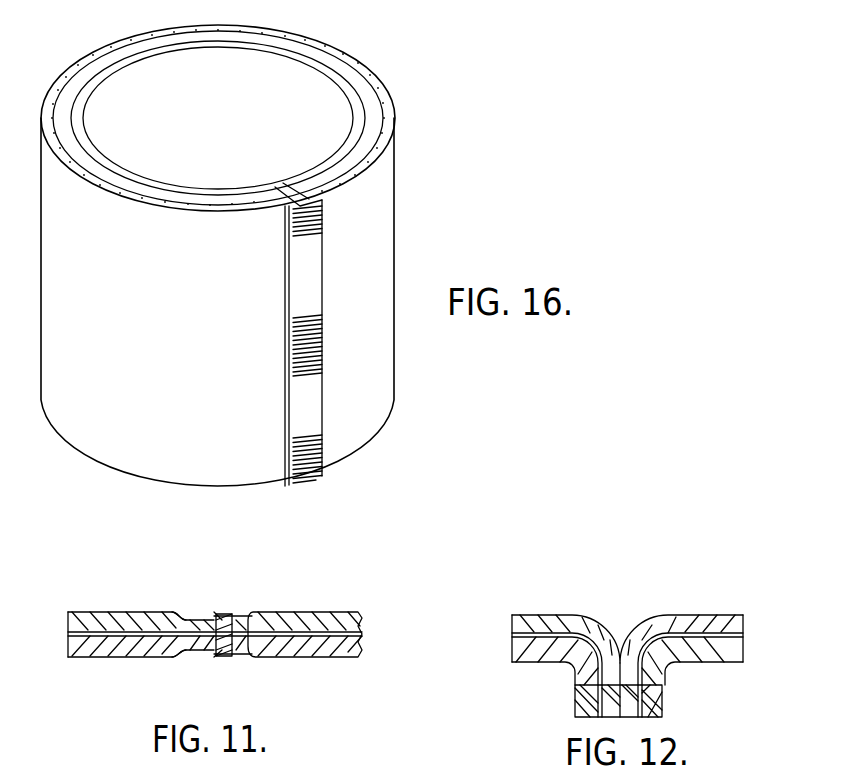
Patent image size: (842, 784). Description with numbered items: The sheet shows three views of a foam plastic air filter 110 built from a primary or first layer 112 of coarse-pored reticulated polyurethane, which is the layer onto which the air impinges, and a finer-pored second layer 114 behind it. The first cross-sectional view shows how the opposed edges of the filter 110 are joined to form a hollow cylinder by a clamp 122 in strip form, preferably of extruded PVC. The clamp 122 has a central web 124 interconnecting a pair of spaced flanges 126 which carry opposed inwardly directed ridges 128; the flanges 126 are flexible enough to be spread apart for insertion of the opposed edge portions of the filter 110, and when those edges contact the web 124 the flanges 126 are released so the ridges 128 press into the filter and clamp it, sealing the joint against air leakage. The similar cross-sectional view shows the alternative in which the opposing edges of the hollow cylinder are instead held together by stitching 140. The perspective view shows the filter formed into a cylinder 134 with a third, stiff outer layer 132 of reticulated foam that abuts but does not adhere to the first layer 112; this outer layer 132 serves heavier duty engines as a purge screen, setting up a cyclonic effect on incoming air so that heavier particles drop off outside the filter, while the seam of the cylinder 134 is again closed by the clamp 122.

In FIG. 11, the air filter 110 is at (287, 659).
In FIG. 12, the air filter 110 is at (687, 606).
In FIG. 16, the first layer 112 is at (367, 103).
In FIG. 11, the first layer 112 is at (335, 652).
In FIG. 12, the first layer 112 is at (525, 647).
In FIG. 16, the second layer 114 is at (348, 97).
In FIG. 11, the second layer 114 is at (328, 622).
In FIG. 12, the second layer 114 is at (514, 625).
In FIG. 16, the clamp 122 is at (300, 391).
In FIG. 11, the clamp 122 is at (225, 608).
In FIG. 11, the central web 124 is at (234, 652).
In FIG. 11, the flanges 126 is at (220, 612).
In FIG. 11, the ridges 128 is at (156, 612).
In FIG. 16, the outer layer 132 is at (387, 130).
In FIG. 16, the cylinder 134 is at (397, 254).
In FIG. 12, the stitching 140 is at (662, 685).